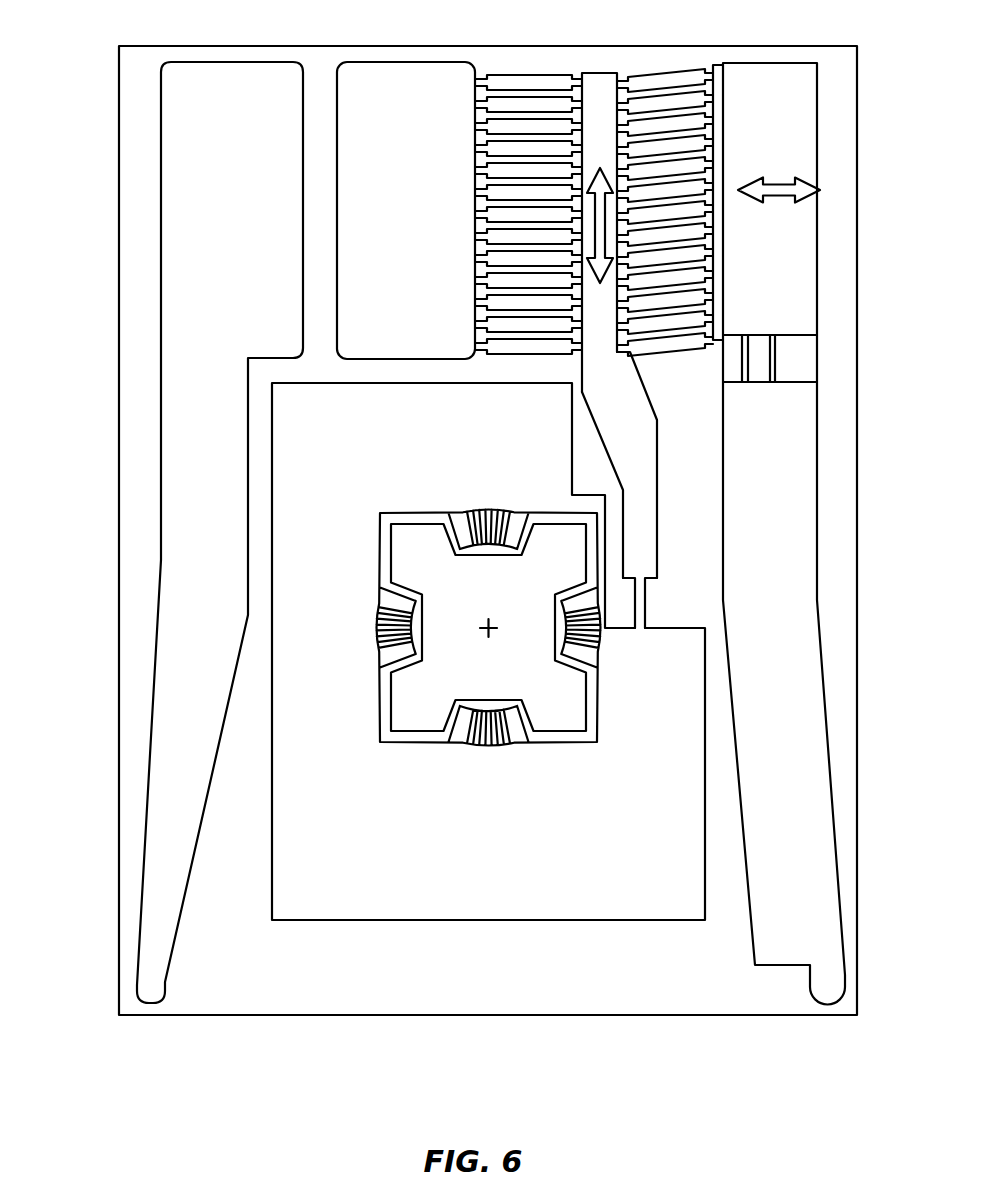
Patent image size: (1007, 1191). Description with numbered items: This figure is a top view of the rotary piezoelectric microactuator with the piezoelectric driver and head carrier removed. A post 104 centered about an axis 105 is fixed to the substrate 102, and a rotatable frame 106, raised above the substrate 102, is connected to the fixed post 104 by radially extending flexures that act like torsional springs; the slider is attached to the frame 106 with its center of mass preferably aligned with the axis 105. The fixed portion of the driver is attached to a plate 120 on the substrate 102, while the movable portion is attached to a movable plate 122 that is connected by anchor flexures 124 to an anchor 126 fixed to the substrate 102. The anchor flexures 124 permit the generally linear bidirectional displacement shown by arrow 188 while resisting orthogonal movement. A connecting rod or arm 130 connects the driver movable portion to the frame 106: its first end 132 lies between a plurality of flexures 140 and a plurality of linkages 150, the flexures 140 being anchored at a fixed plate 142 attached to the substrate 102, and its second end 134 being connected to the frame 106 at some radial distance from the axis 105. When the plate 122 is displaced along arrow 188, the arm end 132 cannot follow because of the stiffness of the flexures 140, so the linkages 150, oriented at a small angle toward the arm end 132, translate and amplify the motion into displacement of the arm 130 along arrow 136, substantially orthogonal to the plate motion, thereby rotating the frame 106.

The substrate 102 is at (129, 470).
The post 104 is at (428, 540).
The axis 105 is at (491, 614).
The rotatable frame 106 is at (540, 900).
The plate 120 is at (187, 143).
The movable plate 122 is at (773, 73).
The anchor flexures 124 is at (775, 373).
The anchor 126 is at (768, 640).
The connecting rod or arm 130 is at (642, 497).
The first end of arm 132 is at (602, 82).
The second end of arm 134 is at (645, 610).
The arrow 136 is at (598, 206).
The flexures 140 is at (503, 73).
The fixed plate 142 is at (378, 68).
The linkages 150 is at (700, 75).
The arrow 188 is at (782, 183).